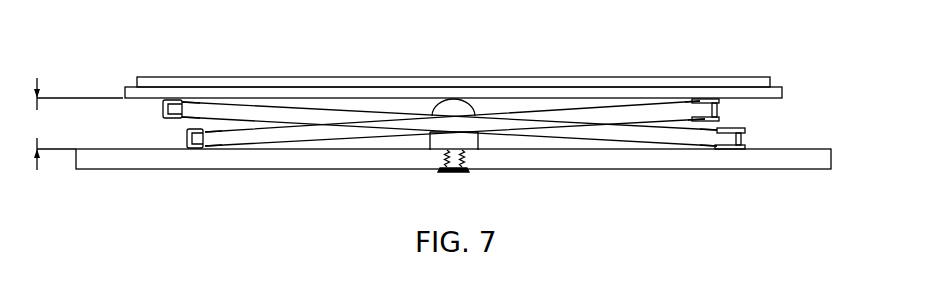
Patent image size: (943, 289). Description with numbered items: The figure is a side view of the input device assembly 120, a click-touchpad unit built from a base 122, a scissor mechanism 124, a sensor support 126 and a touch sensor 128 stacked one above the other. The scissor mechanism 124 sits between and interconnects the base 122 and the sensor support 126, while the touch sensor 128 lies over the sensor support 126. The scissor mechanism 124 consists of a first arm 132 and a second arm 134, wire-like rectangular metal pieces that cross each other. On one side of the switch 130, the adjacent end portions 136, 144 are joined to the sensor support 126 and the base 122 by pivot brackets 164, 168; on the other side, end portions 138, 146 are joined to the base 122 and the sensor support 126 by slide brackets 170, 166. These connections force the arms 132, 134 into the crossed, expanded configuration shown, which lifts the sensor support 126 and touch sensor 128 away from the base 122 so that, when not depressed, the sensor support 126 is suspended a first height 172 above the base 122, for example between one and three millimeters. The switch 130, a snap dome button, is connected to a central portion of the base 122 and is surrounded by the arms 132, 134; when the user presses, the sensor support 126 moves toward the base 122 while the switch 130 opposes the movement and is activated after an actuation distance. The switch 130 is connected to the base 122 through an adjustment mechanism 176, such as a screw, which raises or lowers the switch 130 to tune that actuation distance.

The input device assembly 120 is at (100, 48).
The base 122 is at (106, 165).
The scissor mechanism 124 is at (782, 125).
The sensor support 126 is at (782, 93).
The touch sensor 128 is at (151, 78).
The switch 130 is at (474, 140).
The first arm 132 is at (705, 138).
The second arm 134 is at (260, 140).
The end portion of the first arm 136 is at (176, 100).
The end portion of the first arm 138 is at (730, 142).
The end portion of the second arm 144 is at (197, 140).
The end portion of the second arm 146 is at (703, 99).
The pivot bracket 164 is at (163, 109).
The slide bracket 166 is at (714, 99).
The pivot bracket 168 is at (187, 139).
The slide bracket 170 is at (740, 148).
The first height 172 is at (73, 124).
The adjustment mechanism 176 is at (454, 173).